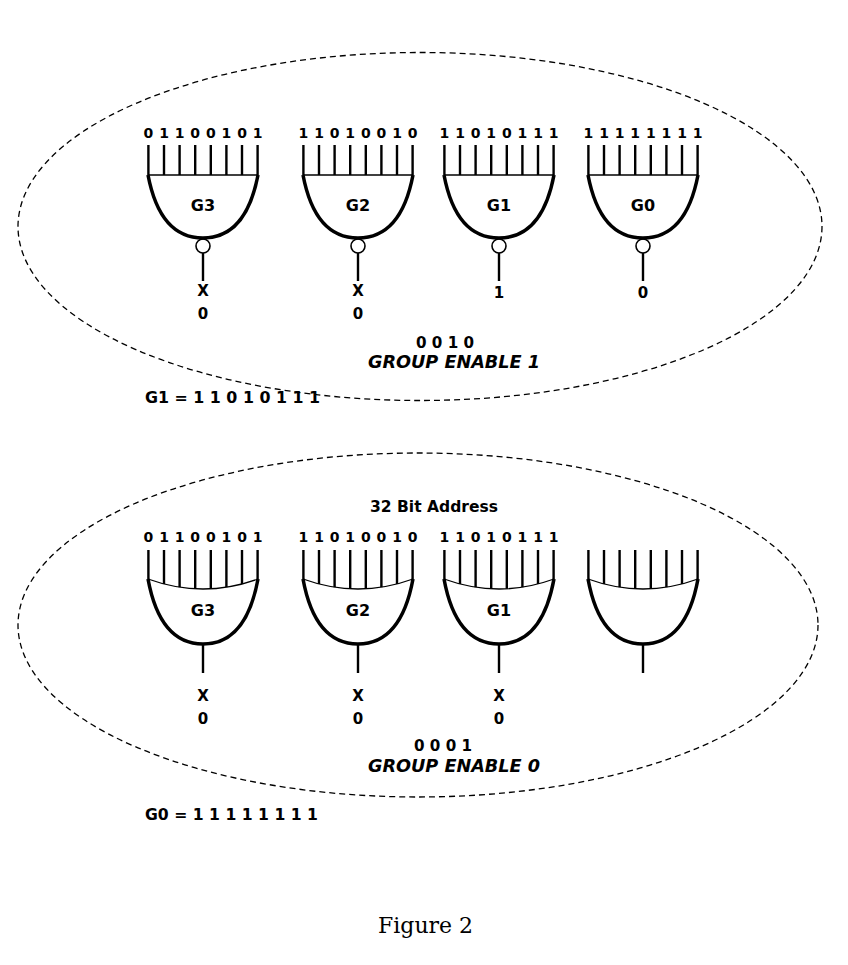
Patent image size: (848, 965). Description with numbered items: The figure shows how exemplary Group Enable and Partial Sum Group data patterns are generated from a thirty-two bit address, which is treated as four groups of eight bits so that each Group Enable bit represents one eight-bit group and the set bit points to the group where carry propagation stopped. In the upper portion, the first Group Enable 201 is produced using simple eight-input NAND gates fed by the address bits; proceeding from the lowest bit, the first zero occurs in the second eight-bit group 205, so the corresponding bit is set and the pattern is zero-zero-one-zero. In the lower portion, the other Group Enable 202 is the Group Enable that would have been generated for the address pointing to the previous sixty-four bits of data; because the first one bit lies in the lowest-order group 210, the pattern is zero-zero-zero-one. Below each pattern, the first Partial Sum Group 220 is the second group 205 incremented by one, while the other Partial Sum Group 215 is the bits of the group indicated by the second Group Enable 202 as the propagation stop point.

The Group Enable 1 201 is at (637, 85).
The Group Enable 0 202 is at (645, 477).
The Group 1 205 is at (512, 113).
The Group 0 210 is at (662, 650).
The Partial Sum Group 0 215 is at (128, 847).
The Partial Sum Group 1 220 is at (132, 430).